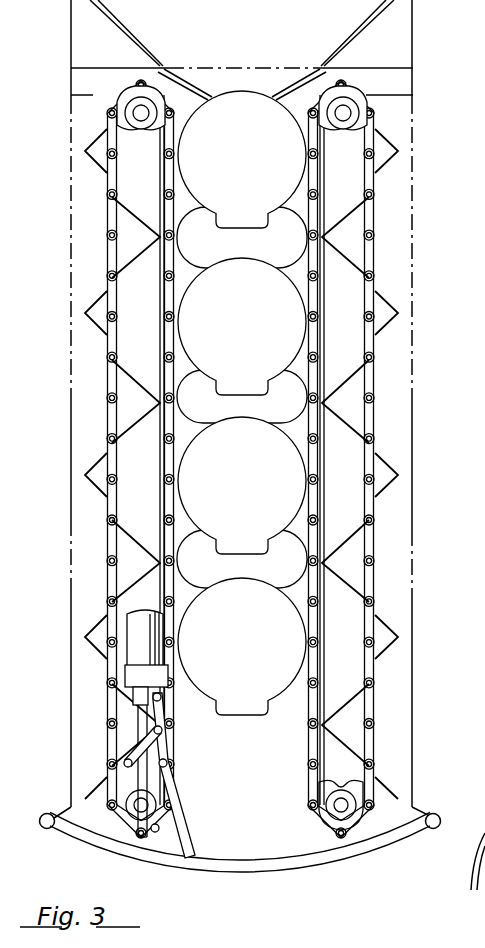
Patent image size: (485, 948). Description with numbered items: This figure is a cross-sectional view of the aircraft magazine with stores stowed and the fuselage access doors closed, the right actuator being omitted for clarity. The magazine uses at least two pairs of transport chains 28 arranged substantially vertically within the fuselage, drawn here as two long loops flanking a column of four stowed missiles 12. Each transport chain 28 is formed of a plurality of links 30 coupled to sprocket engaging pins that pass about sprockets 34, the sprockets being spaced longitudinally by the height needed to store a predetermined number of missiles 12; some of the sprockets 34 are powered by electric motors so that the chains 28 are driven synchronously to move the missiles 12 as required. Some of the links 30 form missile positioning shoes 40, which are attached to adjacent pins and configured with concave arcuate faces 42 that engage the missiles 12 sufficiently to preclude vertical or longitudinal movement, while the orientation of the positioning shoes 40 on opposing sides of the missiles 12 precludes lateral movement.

The missile 12 is at (242, 403).
The transport chain 28 is at (377, 382).
The link 30 is at (377, 127).
The sprocket 34 is at (127, 141).
The missile positioning shoe 40 is at (190, 299).
The concave arcuate face 42 is at (178, 337).